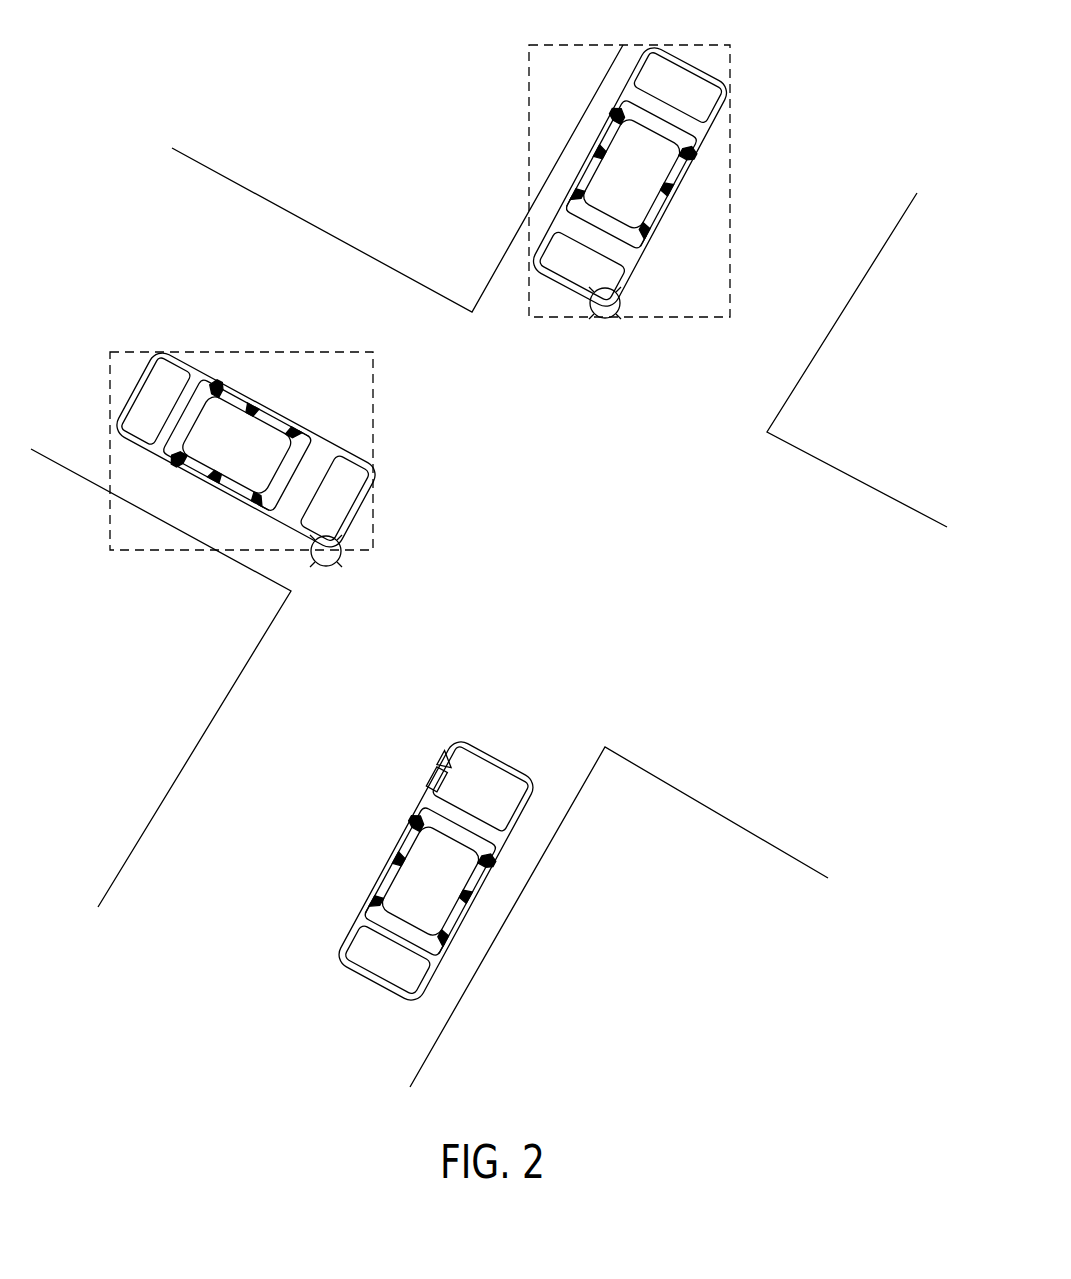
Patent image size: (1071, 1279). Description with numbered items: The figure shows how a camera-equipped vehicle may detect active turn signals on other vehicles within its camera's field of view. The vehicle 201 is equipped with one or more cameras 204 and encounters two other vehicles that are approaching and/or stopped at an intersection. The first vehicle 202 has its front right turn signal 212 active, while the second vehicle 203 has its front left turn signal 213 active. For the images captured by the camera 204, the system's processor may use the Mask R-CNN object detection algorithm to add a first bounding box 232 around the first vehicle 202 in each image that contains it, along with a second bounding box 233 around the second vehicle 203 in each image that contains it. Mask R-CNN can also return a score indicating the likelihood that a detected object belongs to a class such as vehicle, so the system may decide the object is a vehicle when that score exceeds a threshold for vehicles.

The vehicle 201 is at (497, 870).
The first vehicle 202 is at (209, 488).
The second vehicle 203 is at (553, 220).
The camera 204 is at (432, 781).
The front right turn signal 212 is at (325, 568).
The front left turn signal 213 is at (605, 318).
The first bounding box 232 is at (237, 350).
The second bounding box 233 is at (732, 178).